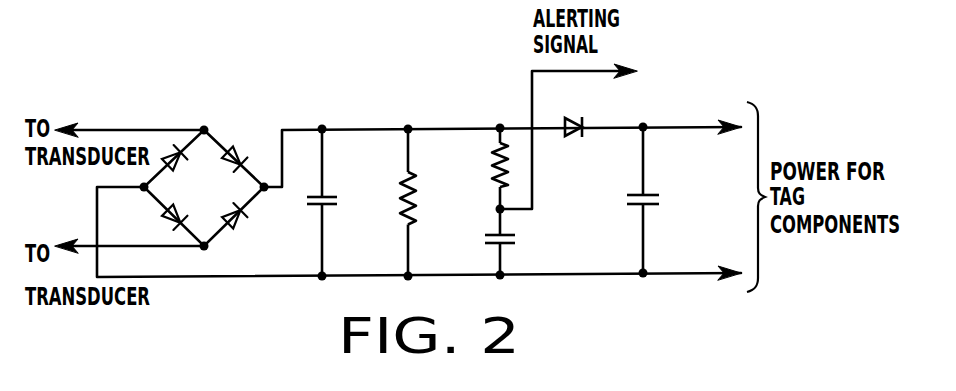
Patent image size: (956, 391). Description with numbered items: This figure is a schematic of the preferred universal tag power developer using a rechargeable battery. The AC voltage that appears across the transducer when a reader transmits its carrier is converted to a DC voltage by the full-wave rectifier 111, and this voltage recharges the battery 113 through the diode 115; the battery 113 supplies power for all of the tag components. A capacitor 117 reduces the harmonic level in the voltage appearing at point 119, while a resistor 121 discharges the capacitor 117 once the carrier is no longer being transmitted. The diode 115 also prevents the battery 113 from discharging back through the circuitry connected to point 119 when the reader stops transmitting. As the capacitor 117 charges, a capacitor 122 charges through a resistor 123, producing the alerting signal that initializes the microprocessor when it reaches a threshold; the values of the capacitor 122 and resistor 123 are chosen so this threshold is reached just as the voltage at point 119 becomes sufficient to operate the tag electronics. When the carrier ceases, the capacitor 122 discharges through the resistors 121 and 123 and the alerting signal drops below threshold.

The full-wave rectifier 111 is at (204, 126).
The battery 113 is at (640, 207).
The diode 115 is at (584, 120).
The capacitor 117 is at (313, 210).
The point 119 is at (408, 126).
The resistor 121 is at (400, 197).
The capacitor 122 is at (494, 250).
The resistor 123 is at (496, 163).